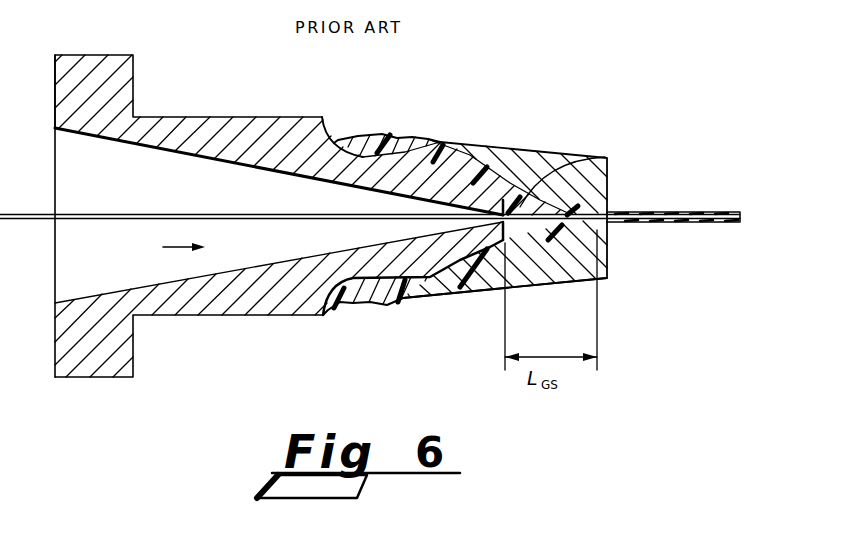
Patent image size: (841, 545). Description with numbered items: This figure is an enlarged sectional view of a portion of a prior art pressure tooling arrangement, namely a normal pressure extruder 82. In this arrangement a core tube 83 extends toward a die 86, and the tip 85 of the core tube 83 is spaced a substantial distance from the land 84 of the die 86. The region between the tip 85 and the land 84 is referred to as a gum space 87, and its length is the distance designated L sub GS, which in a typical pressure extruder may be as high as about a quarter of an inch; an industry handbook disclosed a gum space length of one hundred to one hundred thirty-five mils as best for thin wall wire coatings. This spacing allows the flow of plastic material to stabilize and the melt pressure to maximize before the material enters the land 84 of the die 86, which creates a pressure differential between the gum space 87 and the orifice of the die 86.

The normal pressure extruder 82 is at (533, 123).
The core tube 83 is at (328, 131).
The land 84 is at (593, 210).
The tip 85 is at (543, 198).
The die 86 is at (566, 282).
The gum space 87 is at (557, 238).